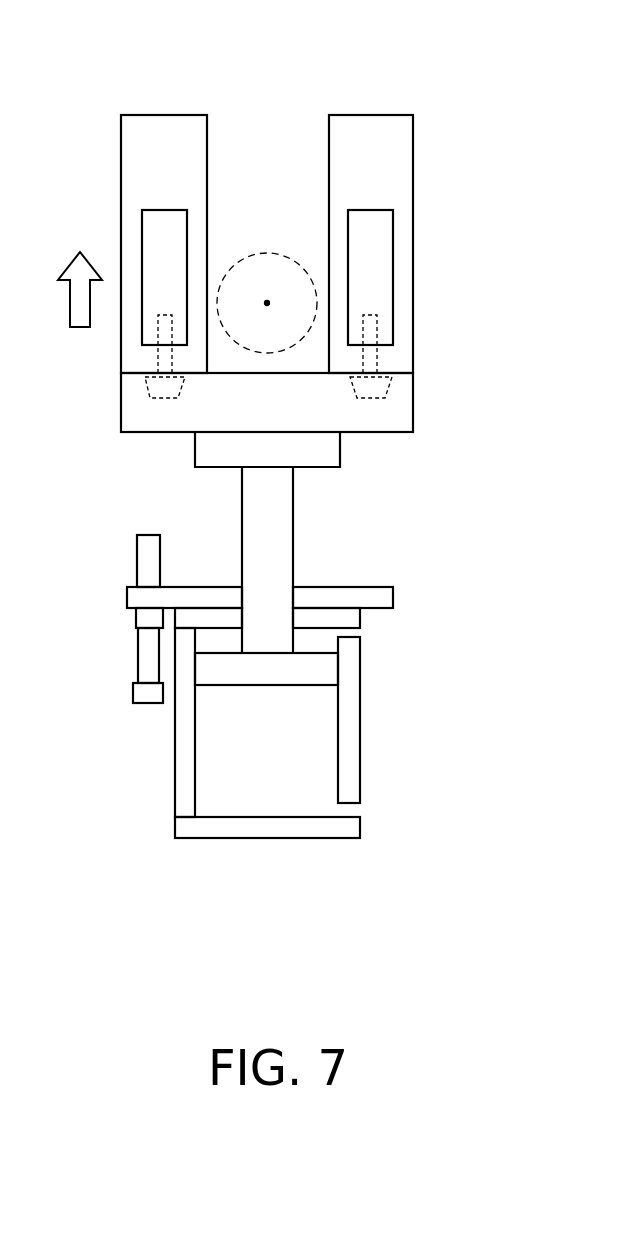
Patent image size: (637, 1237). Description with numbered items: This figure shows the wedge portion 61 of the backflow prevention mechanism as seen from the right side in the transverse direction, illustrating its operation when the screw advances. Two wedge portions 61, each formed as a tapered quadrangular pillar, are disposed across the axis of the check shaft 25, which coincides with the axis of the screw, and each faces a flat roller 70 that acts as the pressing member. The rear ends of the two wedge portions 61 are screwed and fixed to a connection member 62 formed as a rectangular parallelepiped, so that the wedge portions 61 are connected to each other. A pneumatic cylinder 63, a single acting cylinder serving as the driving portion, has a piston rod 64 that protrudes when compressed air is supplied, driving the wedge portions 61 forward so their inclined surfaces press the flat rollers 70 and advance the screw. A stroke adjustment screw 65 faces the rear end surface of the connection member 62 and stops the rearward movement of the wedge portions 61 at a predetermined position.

The wedge portion 61 is at (164, 122).
The flat roller 70 is at (143, 232).
The check shaft 25 is at (270, 250).
The connection member 62 is at (402, 413).
The piston rod 64 is at (284, 568).
The stroke adjustment screw 65 is at (137, 657).
The pneumatic cylinder 63 is at (177, 747).